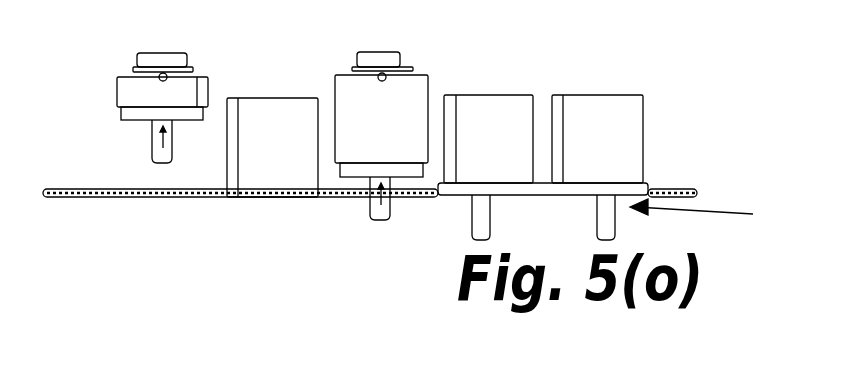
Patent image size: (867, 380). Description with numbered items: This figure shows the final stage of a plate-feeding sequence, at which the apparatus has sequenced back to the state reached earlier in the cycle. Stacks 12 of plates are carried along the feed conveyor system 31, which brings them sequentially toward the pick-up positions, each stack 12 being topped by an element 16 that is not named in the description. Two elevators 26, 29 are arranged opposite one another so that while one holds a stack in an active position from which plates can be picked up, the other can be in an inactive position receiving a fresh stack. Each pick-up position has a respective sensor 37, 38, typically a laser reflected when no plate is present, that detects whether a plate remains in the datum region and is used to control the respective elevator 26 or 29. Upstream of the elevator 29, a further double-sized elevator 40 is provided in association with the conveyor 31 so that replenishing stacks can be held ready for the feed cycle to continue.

The stack 12 is at (607, 132).
The cap 16 is at (140, 53).
The elevator 26 is at (153, 155).
The second elevator 29 is at (375, 208).
The conveyor system 31 is at (668, 190).
The sensor 37 is at (177, 72).
The sensor 38 is at (353, 70).
The double sized elevator 40 is at (712, 216).